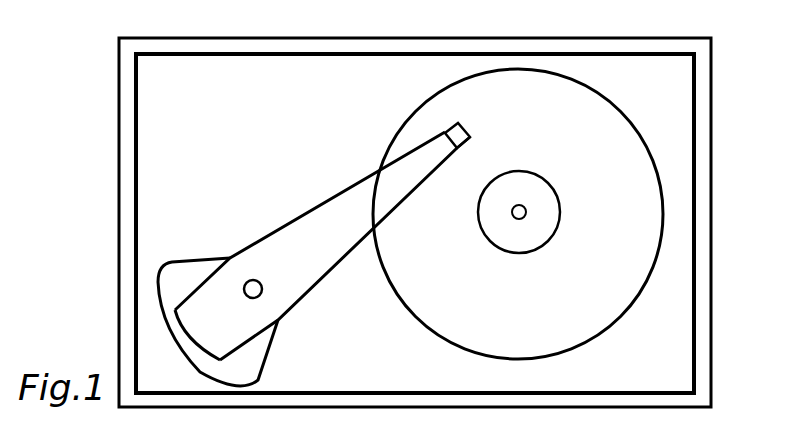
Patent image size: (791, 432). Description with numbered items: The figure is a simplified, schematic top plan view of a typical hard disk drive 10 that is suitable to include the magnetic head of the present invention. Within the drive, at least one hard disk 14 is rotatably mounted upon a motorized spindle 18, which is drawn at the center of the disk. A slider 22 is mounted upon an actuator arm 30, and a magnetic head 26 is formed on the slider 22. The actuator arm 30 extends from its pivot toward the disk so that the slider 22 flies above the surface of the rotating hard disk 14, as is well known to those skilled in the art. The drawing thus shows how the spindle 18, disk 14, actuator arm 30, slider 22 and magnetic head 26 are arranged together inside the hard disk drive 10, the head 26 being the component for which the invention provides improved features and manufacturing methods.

The hard disk drive 10 is at (119, 160).
The hard disk 14 is at (484, 321).
The motorized spindle 18 is at (554, 210).
The slider 22 is at (467, 143).
The magnetic head 26 is at (462, 128).
The actuator arm 30 is at (283, 225).